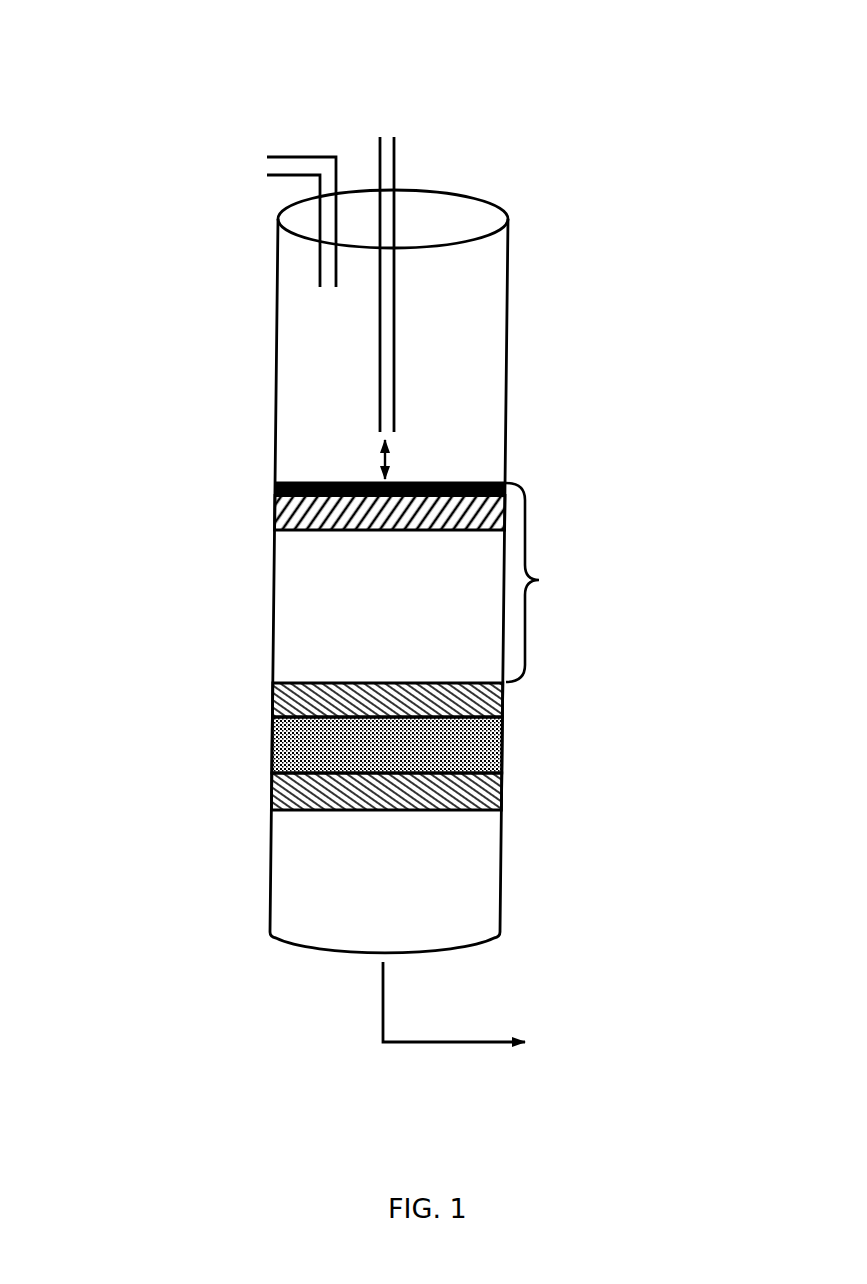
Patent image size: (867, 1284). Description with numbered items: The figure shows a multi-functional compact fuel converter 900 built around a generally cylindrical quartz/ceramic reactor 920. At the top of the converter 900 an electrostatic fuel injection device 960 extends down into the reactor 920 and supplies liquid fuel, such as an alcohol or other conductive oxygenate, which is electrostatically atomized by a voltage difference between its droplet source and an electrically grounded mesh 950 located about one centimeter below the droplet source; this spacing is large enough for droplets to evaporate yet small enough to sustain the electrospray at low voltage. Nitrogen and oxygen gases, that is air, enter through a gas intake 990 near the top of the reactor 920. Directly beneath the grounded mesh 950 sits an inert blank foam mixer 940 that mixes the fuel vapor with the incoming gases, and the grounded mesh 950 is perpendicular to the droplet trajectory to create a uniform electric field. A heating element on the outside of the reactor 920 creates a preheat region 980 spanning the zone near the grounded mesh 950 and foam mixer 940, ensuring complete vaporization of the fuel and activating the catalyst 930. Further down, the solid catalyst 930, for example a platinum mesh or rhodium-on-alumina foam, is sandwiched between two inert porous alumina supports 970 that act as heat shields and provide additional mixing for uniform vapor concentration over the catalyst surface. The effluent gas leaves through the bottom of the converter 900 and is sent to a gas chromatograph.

The converter 900 is at (464, 24).
The reactor 920 is at (512, 313).
The catalyst 930 is at (510, 748).
The inert blank foam mixer 940 is at (274, 517).
The grounded mesh 950 is at (274, 488).
The electrostatic fuel injection device 960 is at (378, 377).
The porous alumina supports 970 is at (271, 696).
The preheat region 980 is at (539, 580).
The gas intake 990 is at (313, 245).